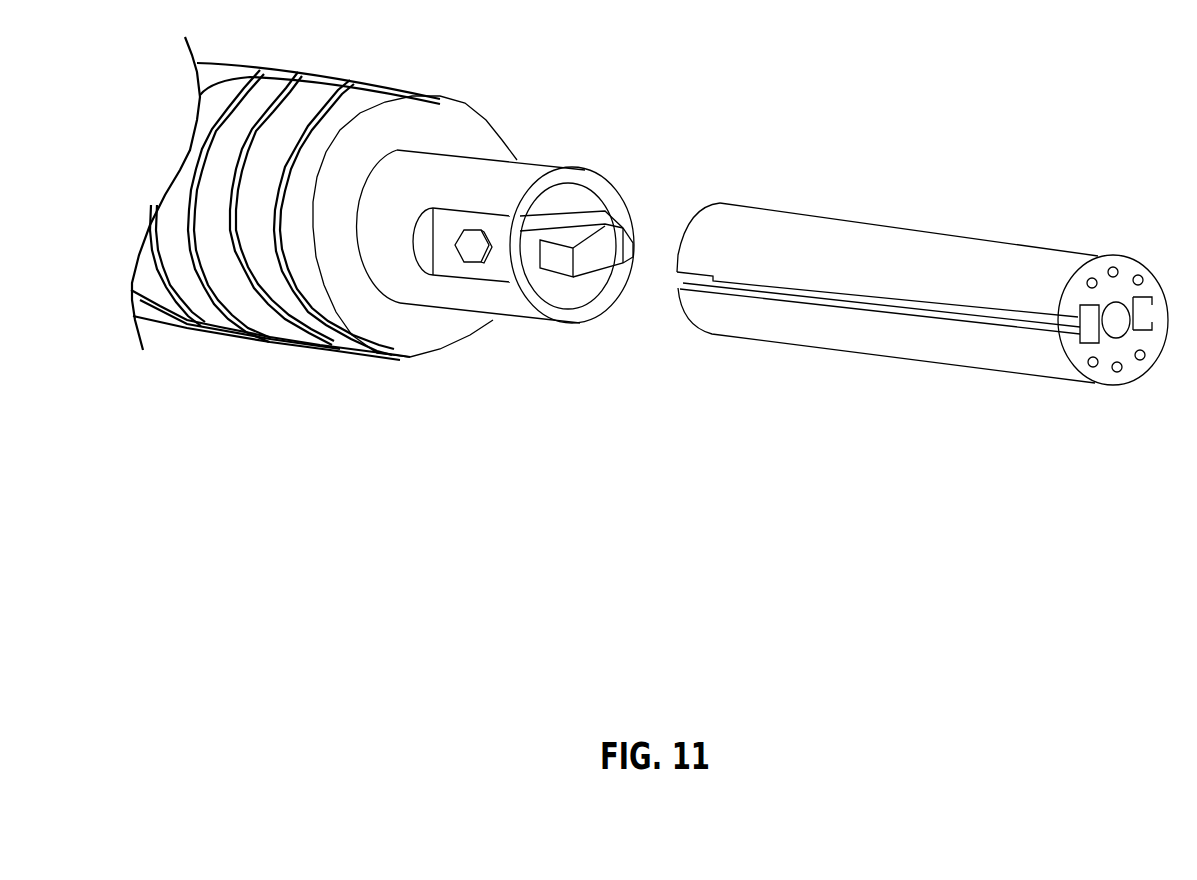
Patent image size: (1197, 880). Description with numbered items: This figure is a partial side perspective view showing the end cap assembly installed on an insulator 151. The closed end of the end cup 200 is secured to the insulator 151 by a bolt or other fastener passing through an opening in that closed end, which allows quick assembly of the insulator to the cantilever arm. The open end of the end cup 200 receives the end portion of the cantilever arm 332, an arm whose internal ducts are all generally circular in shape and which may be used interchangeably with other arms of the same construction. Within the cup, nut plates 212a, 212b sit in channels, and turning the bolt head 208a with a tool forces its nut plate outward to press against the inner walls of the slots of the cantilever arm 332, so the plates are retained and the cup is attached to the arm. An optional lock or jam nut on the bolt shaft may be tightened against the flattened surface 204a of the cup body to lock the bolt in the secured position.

The insulator 151 is at (305, 348).
The end cup 200 is at (513, 320).
The flattened surface 204a is at (487, 225).
The bolt head 208a is at (470, 277).
The nut plate 212a is at (573, 275).
The nut plate 212b is at (640, 248).
The cantilever arm 332 is at (893, 225).